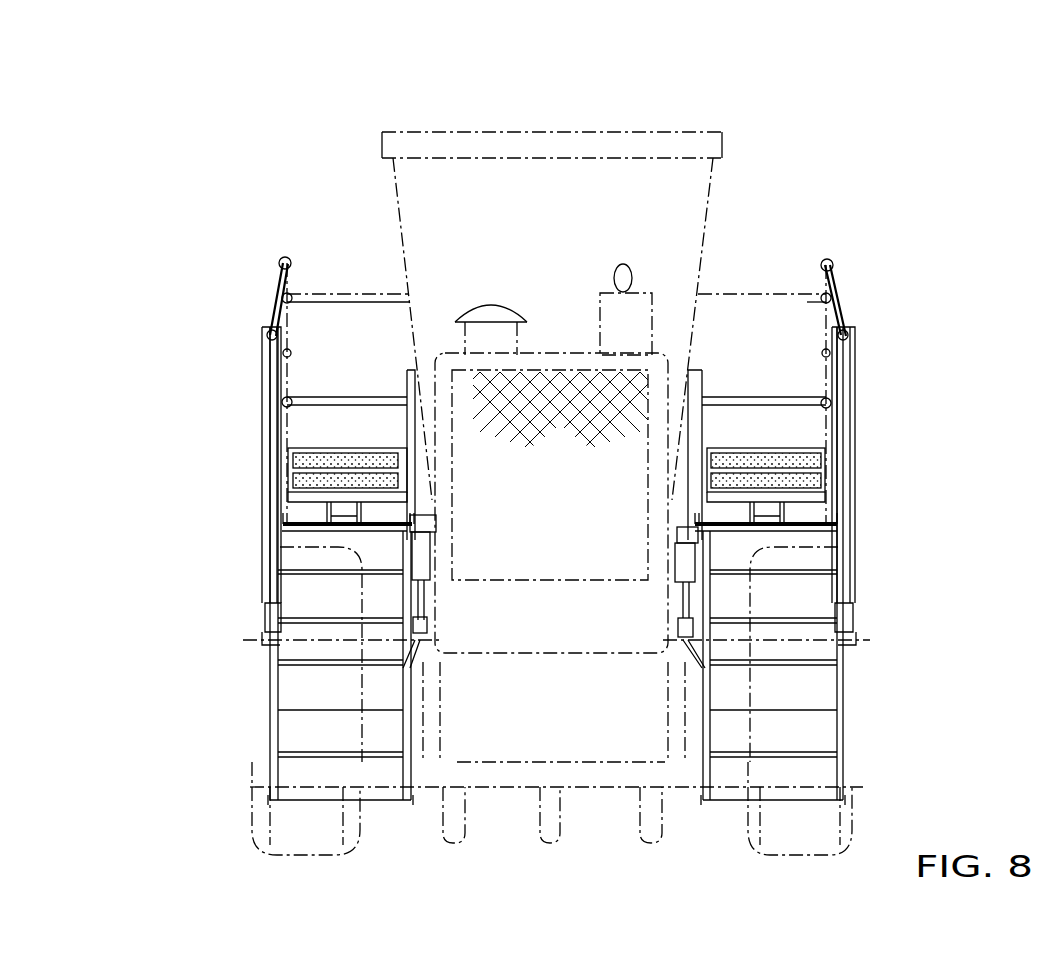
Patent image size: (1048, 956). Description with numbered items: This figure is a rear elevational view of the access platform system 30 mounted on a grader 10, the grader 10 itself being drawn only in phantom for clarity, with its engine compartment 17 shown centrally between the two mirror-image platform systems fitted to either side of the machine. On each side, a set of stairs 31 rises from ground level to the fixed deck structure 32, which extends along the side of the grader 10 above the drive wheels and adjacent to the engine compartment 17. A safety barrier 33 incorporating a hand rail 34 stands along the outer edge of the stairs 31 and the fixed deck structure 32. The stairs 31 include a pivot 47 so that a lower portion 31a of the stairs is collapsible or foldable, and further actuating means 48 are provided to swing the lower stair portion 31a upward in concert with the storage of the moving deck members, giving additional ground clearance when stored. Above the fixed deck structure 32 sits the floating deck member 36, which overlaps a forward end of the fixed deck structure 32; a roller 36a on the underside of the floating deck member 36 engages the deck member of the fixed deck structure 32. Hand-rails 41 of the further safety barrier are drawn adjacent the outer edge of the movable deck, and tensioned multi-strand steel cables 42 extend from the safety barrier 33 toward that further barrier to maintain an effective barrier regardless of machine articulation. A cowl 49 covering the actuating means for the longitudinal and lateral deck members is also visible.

The grader 10 is at (697, 86).
The engine compartment 17 is at (549, 360).
The access platform system 30 is at (345, 248).
The stairs 31 is at (783, 657).
The lower portion of the stairs 31a is at (840, 742).
The fixed deck structure 32 is at (318, 528).
The safety barrier 33 is at (850, 375).
The hand rail 34 is at (840, 587).
The floating deck member 36 is at (310, 495).
The roller 36a is at (327, 516).
The hand-rails 41 is at (783, 293).
The multi-strand steel cables 42 is at (838, 302).
The pivot 47 is at (862, 642).
The further actuating means 48 is at (685, 567).
The cowl 49 is at (413, 385).